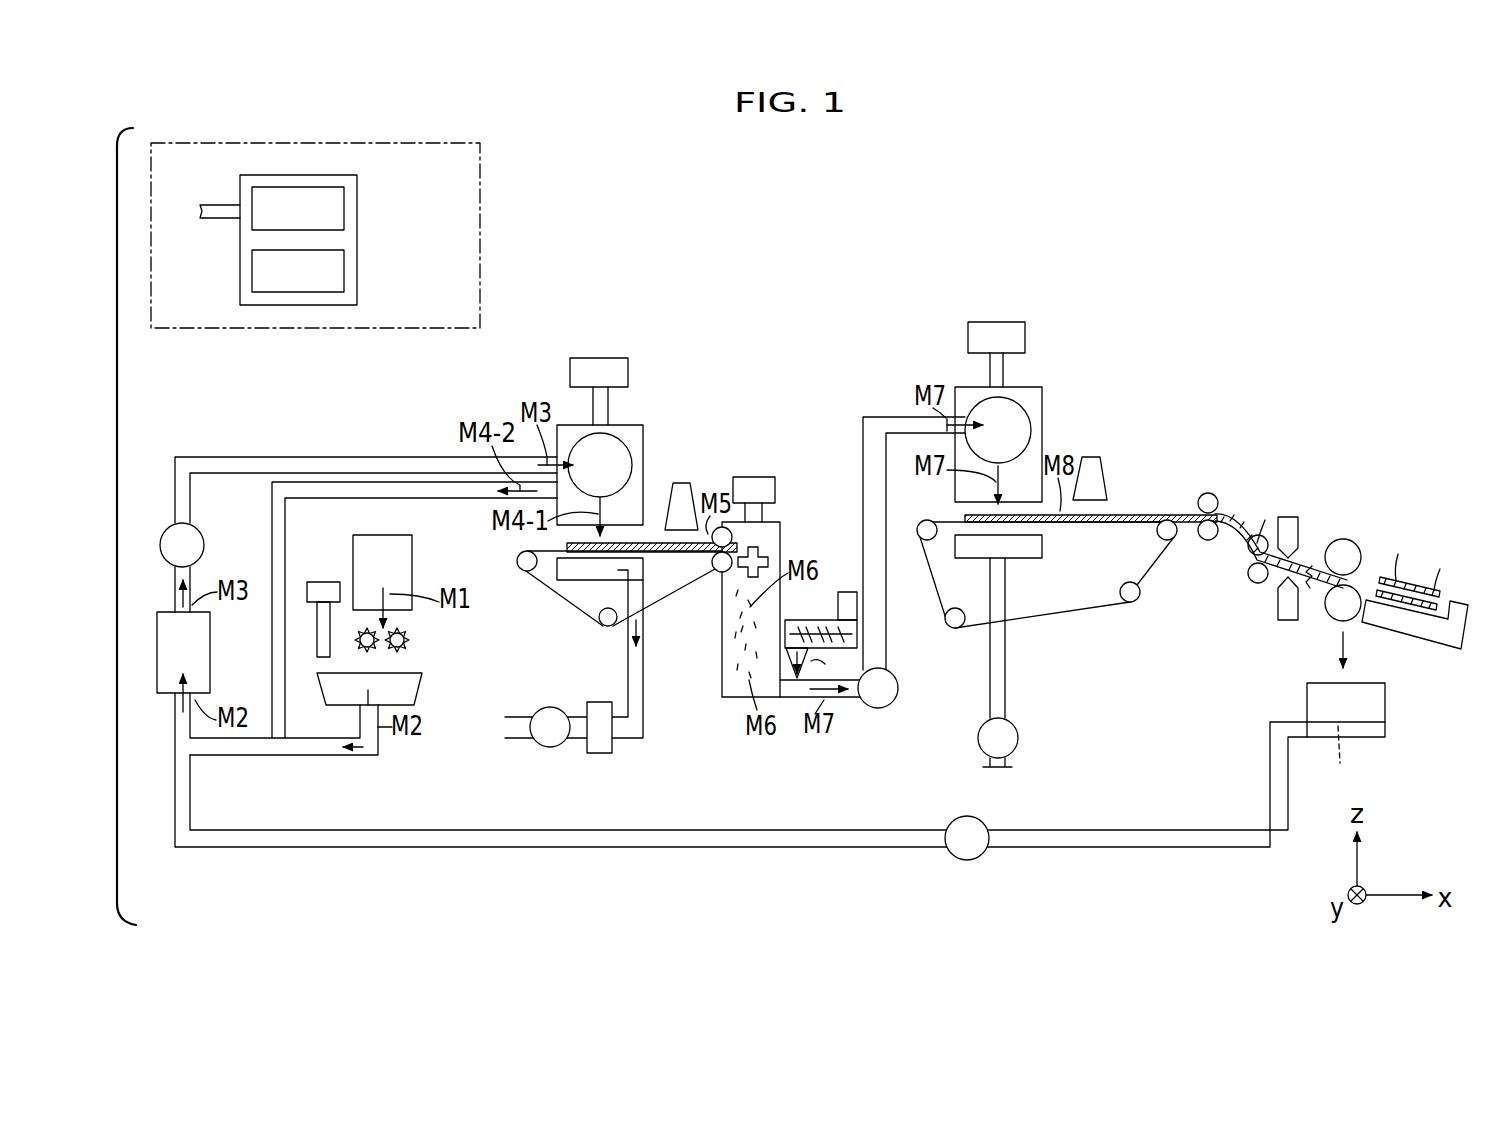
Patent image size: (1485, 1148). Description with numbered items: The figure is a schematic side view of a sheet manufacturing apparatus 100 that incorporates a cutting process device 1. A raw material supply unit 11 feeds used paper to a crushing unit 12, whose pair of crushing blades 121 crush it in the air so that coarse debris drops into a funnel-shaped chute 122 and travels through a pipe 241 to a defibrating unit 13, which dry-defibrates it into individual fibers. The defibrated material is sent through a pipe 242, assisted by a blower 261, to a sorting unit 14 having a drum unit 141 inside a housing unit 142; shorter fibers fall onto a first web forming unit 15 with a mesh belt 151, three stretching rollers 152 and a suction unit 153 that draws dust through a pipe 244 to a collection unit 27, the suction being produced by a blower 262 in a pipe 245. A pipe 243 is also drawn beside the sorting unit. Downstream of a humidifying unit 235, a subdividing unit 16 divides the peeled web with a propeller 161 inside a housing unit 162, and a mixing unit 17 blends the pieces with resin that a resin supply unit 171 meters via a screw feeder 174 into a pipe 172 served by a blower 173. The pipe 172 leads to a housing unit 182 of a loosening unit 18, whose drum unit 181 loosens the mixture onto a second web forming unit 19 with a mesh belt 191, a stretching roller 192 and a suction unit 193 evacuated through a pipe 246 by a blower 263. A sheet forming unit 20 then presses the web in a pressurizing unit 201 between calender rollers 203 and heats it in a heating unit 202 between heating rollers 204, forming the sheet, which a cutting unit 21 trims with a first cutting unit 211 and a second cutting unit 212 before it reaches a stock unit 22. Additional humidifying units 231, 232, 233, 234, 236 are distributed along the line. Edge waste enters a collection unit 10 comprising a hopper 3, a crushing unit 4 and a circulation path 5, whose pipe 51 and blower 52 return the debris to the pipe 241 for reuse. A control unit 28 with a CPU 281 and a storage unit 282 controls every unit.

The sheet manufacturing apparatus 100 is at (1231, 326).
The cutting process device 1 is at (1311, 550).
The hopper 3 is at (1380, 703).
The crushing unit 4 is at (1336, 758).
The circulation path 5 is at (780, 812).
The collection unit 10 is at (1388, 737).
The raw material supply unit 11 is at (412, 560).
The crushing unit 12 is at (402, 660).
The defibrating unit 13 is at (210, 655).
The sorting unit 14 is at (639, 423).
The first web forming unit 15 is at (620, 618).
The subdividing unit 16 is at (762, 633).
The mixing unit 17 is at (881, 603).
The loosening unit 18 is at (1042, 389).
The second web forming unit 19 is at (1059, 583).
The sheet forming unit 20 is at (1229, 539).
The cutting unit 21 is at (1342, 545).
The stock unit 22 is at (1424, 624).
The collection unit 27 is at (606, 754).
The control unit 28 is at (315, 235).
The pipe 51 is at (851, 850).
The blower 52 is at (967, 865).
The crushing blades 121 is at (380, 652).
The chute 122 is at (412, 690).
The drum unit 141 is at (628, 446).
The housing unit 142 is at (630, 424).
The mesh belt 151 is at (660, 626).
The stretching rollers 152 is at (522, 569).
The suction unit 153 is at (643, 568).
The propeller 161 is at (762, 553).
The housing unit 162 is at (735, 698).
The resin supply unit 171 is at (833, 618).
The pipe 172 is at (893, 658).
The blower 173 is at (884, 708).
The screw feeder 174 is at (799, 620).
The drum unit 181 is at (1031, 414).
The housing unit 182 is at (1030, 385).
The mesh belt 191 is at (1053, 615).
The stretching roller 192 is at (926, 519).
The suction unit 193 is at (1042, 546).
The pressurizing unit 201 is at (1206, 479).
The heating unit 202 is at (1220, 598).
The calender rollers 203 is at (1258, 452).
The heating rollers 204 is at (1249, 562).
The first cutting unit 211 is at (1308, 512).
The second cutting unit 212 is at (1302, 452).
The humidifying unit 231 is at (324, 582).
The humidifying unit 232 is at (600, 358).
The humidifying unit 233 is at (754, 477).
The humidifying unit 234 is at (997, 322).
The humidifying unit 235 is at (684, 483).
The humidifying unit 236 is at (1101, 460).
The pipe 241 is at (320, 757).
The pipe 242 is at (195, 457).
The pipe 243 is at (400, 482).
The pipe 244 is at (647, 705).
The pipe 245 is at (580, 739).
The pipe 246 is at (1006, 698).
The blower 261 is at (170, 530).
The blower 262 is at (546, 749).
The blower 263 is at (1018, 738).
The central processing unit 281 is at (344, 208).
The storage unit 282 is at (331, 271).